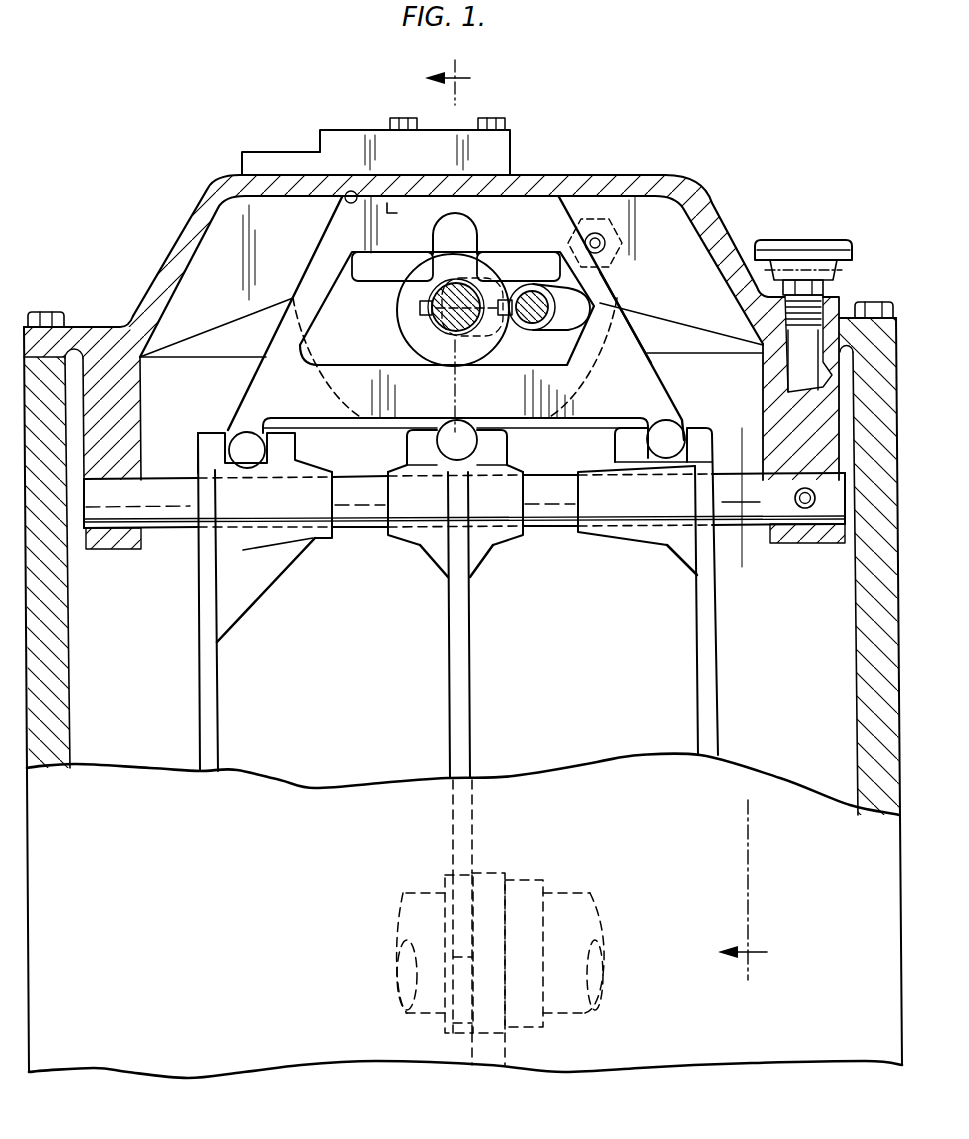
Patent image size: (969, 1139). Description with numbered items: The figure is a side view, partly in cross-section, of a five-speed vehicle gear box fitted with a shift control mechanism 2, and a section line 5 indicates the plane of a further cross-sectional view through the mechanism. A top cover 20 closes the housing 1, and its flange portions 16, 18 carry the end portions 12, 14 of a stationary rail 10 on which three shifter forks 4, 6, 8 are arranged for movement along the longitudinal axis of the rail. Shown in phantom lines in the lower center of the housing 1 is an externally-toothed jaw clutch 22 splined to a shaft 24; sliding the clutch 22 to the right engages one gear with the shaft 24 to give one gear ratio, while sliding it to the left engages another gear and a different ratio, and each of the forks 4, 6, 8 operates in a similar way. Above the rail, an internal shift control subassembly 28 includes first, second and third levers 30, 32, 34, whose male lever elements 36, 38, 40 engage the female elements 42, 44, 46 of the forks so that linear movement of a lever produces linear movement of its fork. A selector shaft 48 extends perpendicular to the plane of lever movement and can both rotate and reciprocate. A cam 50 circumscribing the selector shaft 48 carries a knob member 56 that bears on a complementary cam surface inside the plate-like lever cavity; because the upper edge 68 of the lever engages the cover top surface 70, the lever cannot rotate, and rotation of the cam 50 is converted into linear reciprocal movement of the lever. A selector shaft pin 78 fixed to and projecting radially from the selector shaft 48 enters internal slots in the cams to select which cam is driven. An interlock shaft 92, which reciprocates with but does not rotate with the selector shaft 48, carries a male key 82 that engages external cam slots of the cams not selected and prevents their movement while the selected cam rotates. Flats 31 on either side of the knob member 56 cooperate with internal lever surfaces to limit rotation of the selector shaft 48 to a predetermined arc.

The housing 1 is at (80, 668).
The shift control mechanism 2 is at (607, 155).
The shifter fork 4 is at (214, 698).
The section line 5- 5 is at (592, 517).
The shifter fork 6 is at (469, 683).
The shifter fork 8 is at (718, 620).
The stationary rail 10 is at (350, 542).
The end portion 12 is at (122, 505).
The end portion 14 is at (760, 505).
The flange portion 16 is at (125, 410).
The flange portion 18 is at (785, 410).
The top cover 20 is at (168, 243).
The externally-toothed jaw clutch 22 is at (492, 875).
The shaft 24 is at (576, 893).
The internal shift control subassembly 28 is at (643, 322).
The first lever 30 is at (295, 292).
The flats 31 is at (430, 256).
The second lever 32 is at (350, 337).
The third lever 34 is at (652, 337).
The male lever element 36 is at (231, 437).
The male lever element 38 is at (453, 442).
The male lever element 40 is at (645, 440).
The female element 42 is at (302, 451).
The female element 44 is at (500, 450).
The female element 46 is at (697, 435).
The selector shaft 48 is at (470, 275).
The cam 50 is at (396, 336).
The knob member 56 is at (453, 229).
The upper edge 68 is at (345, 199).
The cover top surface 70 is at (402, 213).
The selector shaft pin 78 is at (438, 298).
The male key 82 is at (510, 300).
The interlock shaft 92 is at (546, 305).